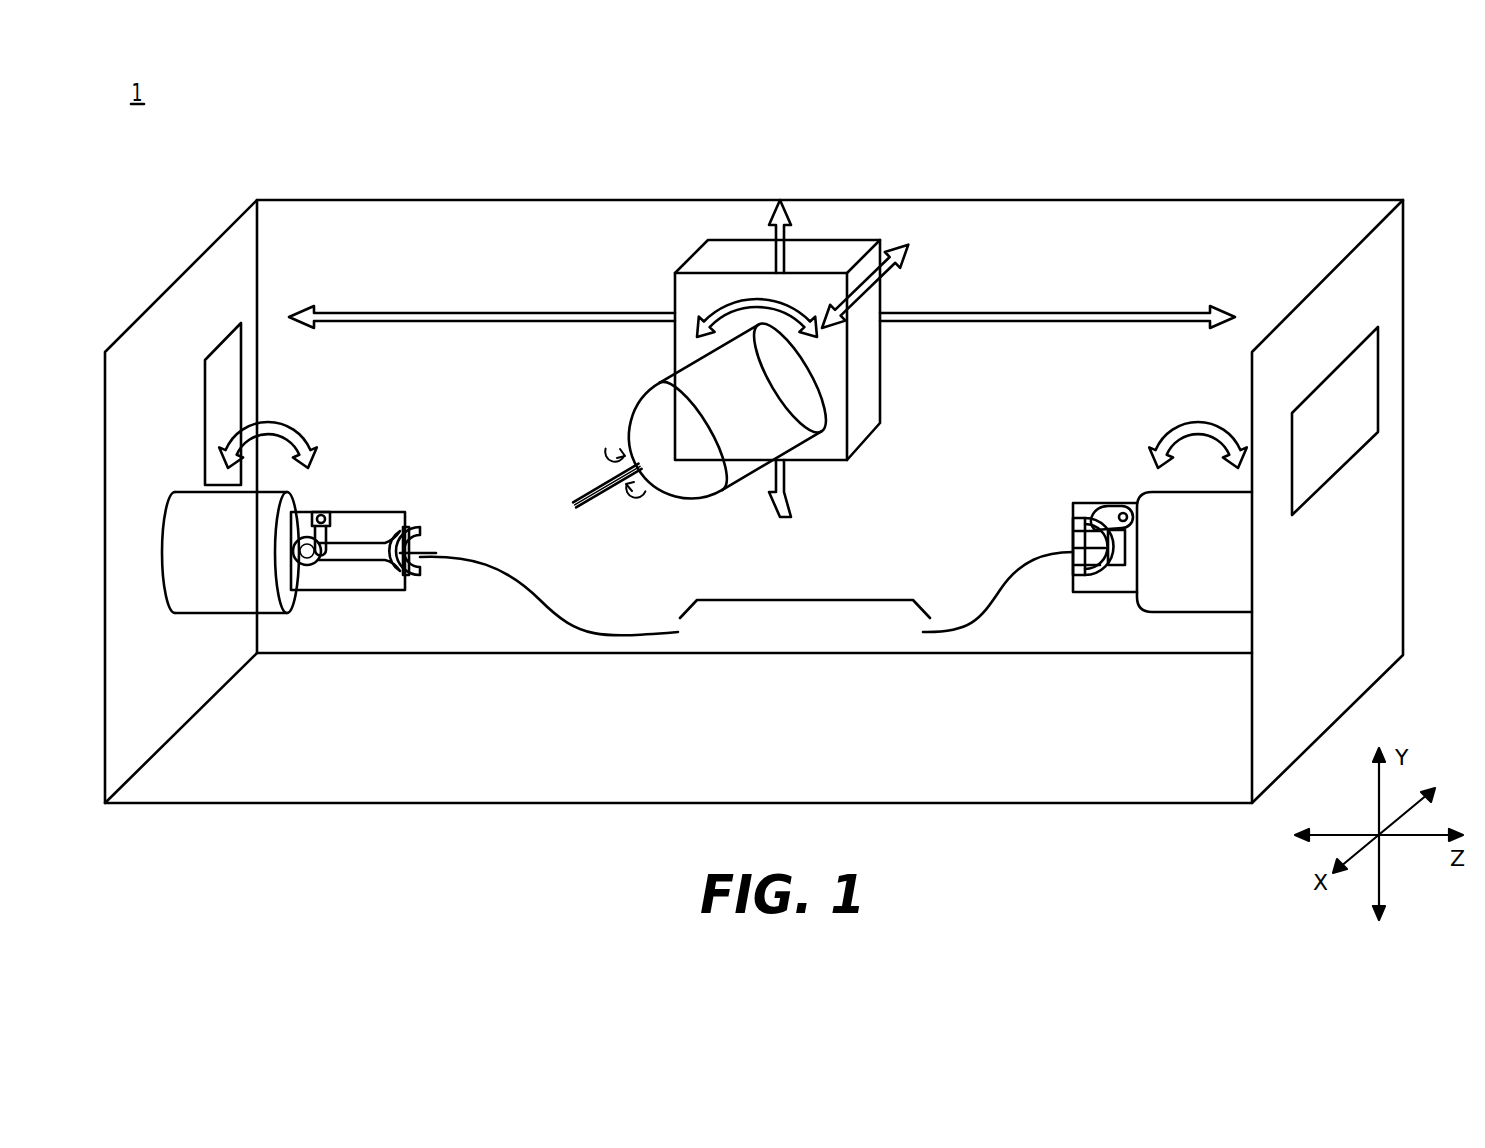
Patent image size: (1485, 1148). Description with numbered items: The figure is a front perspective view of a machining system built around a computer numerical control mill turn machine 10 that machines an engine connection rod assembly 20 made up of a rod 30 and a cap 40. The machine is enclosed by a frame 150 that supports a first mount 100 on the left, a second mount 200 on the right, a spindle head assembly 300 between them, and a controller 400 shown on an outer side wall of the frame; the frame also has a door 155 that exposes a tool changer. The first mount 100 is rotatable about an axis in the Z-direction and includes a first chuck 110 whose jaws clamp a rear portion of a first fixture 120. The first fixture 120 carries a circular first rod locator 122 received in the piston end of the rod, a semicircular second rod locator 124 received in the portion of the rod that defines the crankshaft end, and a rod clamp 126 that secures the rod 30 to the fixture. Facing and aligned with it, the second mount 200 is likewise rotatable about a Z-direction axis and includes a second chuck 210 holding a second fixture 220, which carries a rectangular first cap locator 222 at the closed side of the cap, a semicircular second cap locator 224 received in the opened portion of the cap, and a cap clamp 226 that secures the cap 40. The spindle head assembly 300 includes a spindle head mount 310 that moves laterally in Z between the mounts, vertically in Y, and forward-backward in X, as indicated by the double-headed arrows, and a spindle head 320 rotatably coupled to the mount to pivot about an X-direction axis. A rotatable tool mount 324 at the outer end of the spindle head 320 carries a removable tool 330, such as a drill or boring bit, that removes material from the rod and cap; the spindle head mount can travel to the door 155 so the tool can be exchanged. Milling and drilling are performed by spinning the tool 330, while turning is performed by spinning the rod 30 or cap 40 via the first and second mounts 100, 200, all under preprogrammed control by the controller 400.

The mill turn machine 10 is at (232, 188).
The engine connection rod assembly 20 is at (808, 600).
The rod 30 is at (565, 601).
The cap 40 is at (982, 599).
The first mount 100 is at (321, 549).
The first chuck 110 is at (205, 600).
The first fixture 120 is at (405, 592).
The first rod locator 122 is at (299, 544).
The second rod locator 124 is at (418, 547).
The rod clamp 126 is at (333, 527).
The frame 150 is at (1322, 224).
The door 155 is at (223, 360).
The second mount 200 is at (1126, 560).
The second chuck 210 is at (1178, 602).
The second fixture 220 is at (1073, 570).
The first cap locator 222 is at (1122, 545).
The second cap locator 224 is at (1088, 540).
The cap clamp 226 is at (1102, 512).
The spindle head assembly 300 is at (751, 395).
The spindle head mount 310 is at (712, 260).
The spindle head 320 is at (723, 416).
The tool mount 324 is at (640, 430).
The tool 330 is at (618, 473).
The controller 400 is at (1363, 380).